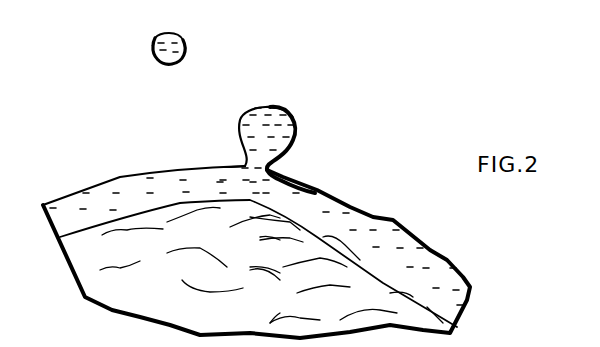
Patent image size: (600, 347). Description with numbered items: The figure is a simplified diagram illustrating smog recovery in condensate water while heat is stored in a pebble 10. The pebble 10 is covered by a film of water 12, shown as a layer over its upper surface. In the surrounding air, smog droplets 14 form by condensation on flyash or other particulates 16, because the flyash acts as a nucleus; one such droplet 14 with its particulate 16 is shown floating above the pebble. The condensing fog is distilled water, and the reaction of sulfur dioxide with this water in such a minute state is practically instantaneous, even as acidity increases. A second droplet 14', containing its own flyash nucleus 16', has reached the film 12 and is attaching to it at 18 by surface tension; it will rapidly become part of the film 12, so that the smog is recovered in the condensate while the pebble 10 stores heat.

The pebble 10 is at (240, 322).
The covering film of water 12 is at (127, 193).
The smog droplets 14 is at (155, 60).
The droplet 14' is at (289, 150).
The flyash or other particulates 16 is at (190, 36).
The flyash particulate 16' is at (277, 113).
The attachment point 18 is at (245, 165).